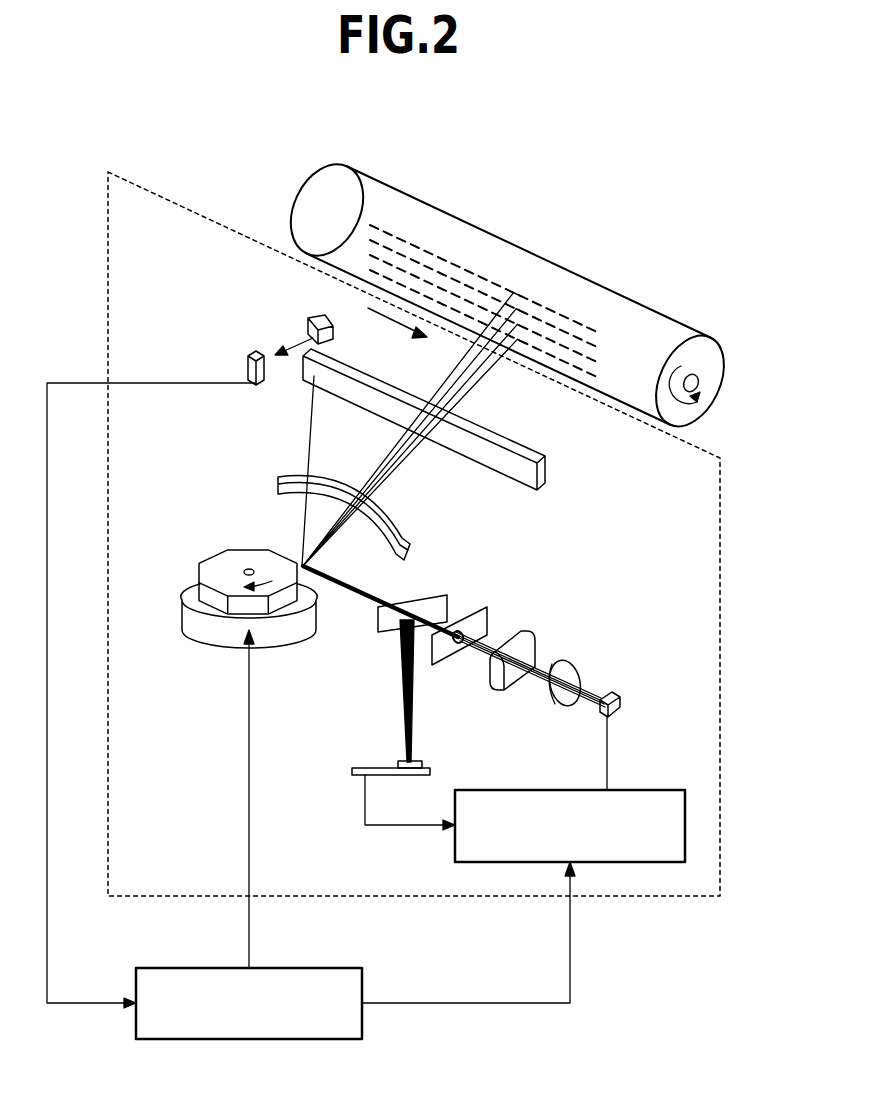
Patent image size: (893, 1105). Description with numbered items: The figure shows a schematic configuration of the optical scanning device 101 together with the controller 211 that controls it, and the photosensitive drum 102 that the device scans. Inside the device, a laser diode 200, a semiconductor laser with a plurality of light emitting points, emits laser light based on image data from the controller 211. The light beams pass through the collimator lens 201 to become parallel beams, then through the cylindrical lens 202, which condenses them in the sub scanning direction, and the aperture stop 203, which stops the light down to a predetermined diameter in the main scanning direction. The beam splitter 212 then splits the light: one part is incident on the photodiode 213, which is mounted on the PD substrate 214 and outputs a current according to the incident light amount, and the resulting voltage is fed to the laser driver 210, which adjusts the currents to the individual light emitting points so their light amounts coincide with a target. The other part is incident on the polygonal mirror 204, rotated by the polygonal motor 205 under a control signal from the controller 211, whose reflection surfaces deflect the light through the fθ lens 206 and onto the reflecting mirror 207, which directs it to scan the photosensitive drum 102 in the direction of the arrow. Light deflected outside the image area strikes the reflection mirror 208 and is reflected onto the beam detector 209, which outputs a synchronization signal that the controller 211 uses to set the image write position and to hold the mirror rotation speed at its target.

The optical scanning device 101 is at (721, 585).
The photosensitive drum 102 is at (537, 248).
The laser diode 200 is at (619, 698).
The collimator lens 201 is at (572, 664).
The cylindrical lens 202 is at (530, 640).
The aperture stop 203 is at (480, 608).
The polygonal mirror 204 is at (212, 558).
The polygonal motor 205 is at (209, 636).
The fθ lens 206 is at (276, 486).
The reflecting mirror 207 is at (548, 470).
The reflection mirror 208 is at (310, 329).
The beam detector 209 is at (246, 370).
The laser driver 210 is at (537, 789).
The controller 211 is at (321, 967).
The beam splitter 212 is at (445, 596).
The photodiode 213 is at (420, 760).
The PD substrate 214 is at (370, 767).